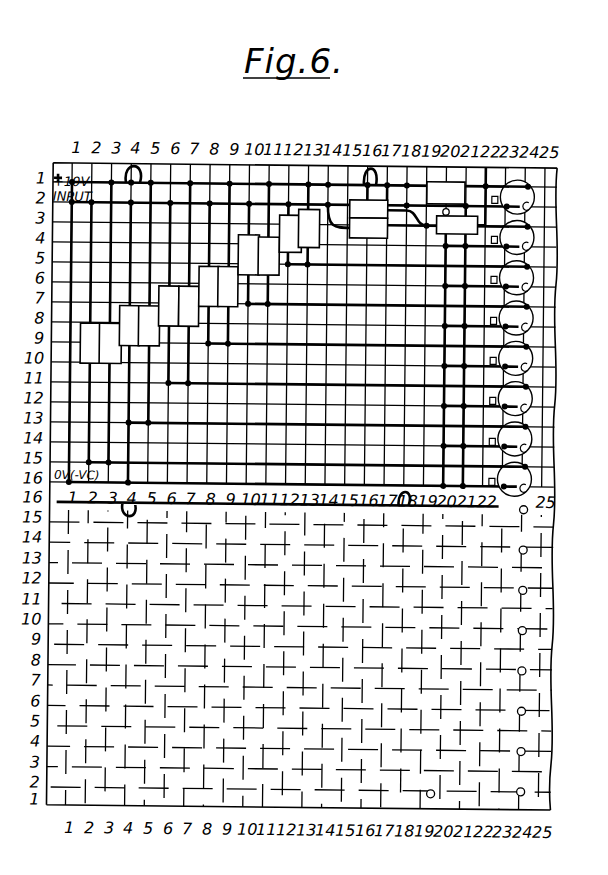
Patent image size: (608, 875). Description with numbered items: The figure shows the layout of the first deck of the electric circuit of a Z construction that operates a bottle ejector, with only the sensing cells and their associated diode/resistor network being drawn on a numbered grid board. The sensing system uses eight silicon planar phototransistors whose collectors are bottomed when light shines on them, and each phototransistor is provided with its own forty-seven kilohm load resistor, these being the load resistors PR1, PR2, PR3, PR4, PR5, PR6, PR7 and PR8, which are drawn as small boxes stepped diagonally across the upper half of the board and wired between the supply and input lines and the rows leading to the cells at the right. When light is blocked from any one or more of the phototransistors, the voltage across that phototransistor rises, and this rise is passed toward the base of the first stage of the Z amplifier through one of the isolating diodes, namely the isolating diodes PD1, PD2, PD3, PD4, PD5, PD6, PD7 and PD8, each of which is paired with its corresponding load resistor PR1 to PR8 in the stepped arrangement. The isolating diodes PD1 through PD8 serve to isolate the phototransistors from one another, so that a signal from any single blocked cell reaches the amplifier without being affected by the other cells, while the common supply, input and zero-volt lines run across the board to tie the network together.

The load resistor PR1 is at (435, 202).
The load resistor PR2 is at (361, 205).
The load resistor PR3 is at (319, 238).
The load resistor PR4 is at (277, 272).
The load resistor PR5 is at (238, 306).
The load resistor PR6 is at (199, 329).
The load resistor PR7 is at (161, 357).
The load resistor PR8 is at (113, 383).
The isolating diode PD1 is at (456, 225).
The isolating diode PD2 is at (368, 228).
The isolating diode PD3 is at (290, 233).
The isolating diode PD4 is at (248, 255).
The isolating diode PD5 is at (209, 286).
The isolating diode PD6 is at (168, 306).
The isolating diode PD7 is at (129, 326).
The isolating diode PD8 is at (90, 343).